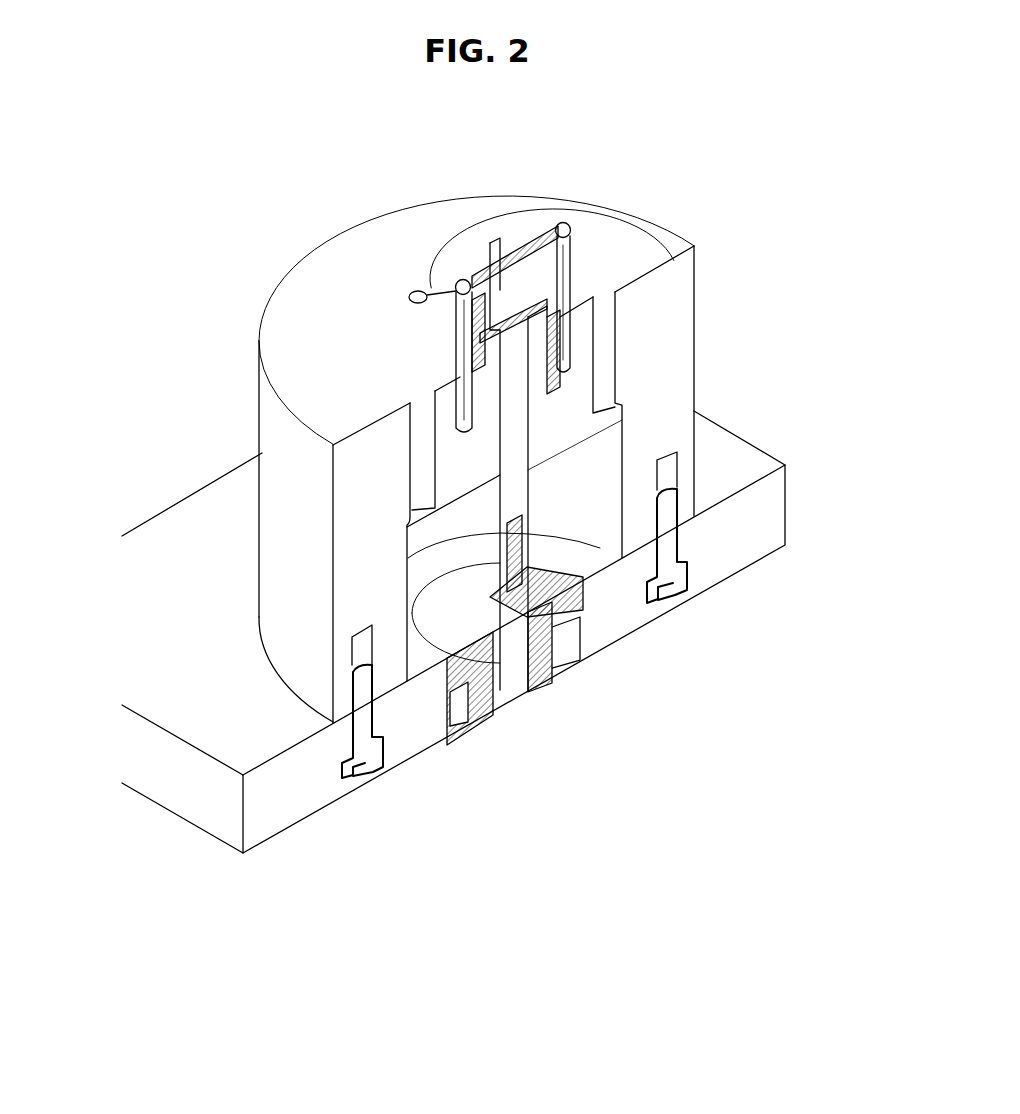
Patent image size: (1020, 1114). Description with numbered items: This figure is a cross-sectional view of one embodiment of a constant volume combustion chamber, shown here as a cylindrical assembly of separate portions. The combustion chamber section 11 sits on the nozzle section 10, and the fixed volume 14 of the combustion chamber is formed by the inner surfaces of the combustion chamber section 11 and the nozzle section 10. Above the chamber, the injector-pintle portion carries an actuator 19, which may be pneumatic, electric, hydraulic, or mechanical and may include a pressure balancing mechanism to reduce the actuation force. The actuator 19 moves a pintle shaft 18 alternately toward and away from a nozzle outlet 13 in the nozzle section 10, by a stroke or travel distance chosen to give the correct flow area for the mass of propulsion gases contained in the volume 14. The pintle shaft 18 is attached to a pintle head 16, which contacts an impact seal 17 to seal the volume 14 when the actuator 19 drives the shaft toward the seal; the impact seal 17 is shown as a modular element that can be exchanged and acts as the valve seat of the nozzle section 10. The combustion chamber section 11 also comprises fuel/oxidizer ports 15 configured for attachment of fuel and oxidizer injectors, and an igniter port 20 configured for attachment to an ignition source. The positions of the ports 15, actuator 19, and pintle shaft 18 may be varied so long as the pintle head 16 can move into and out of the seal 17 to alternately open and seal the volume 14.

The nozzle section 10 is at (303, 787).
The combustion chamber section 11 is at (285, 453).
The nozzle outlet 13 is at (518, 690).
The volume of the combustion chamber 14 is at (560, 502).
The fuel/oxidizer ports 15 is at (412, 396).
The pintle head 16 is at (517, 603).
The impact seal 17 is at (497, 647).
The pintle shaft 18 is at (513, 440).
The actuator 19 is at (435, 284).
The igniter port 20 is at (410, 290).